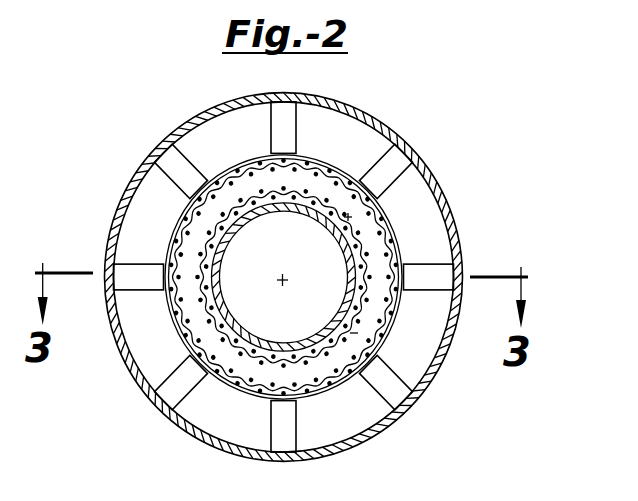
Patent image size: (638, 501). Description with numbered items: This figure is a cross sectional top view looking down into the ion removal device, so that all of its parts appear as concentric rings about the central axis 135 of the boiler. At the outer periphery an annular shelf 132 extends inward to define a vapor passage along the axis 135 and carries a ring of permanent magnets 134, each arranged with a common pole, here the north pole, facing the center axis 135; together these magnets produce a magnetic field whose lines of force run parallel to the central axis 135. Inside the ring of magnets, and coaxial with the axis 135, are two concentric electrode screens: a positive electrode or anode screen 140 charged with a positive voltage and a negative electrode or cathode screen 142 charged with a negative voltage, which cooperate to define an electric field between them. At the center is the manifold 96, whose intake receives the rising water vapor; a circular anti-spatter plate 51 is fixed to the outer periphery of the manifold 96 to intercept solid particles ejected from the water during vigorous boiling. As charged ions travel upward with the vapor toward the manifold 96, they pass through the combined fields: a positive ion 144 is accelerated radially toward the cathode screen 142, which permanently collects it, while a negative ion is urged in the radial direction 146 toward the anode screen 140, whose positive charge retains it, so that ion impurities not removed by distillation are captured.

The annular shelf 132 is at (162, 334).
The permanent magnets 134 is at (186, 152).
The anti-spatter plate 51 is at (388, 222).
The cathode screen 142 is at (168, 258).
The positive ion 144 is at (350, 205).
The anode screen 140 is at (238, 205).
The radial direction 146 is at (353, 338).
The manifold 96 is at (232, 235).
The central axis 135 is at (285, 282).